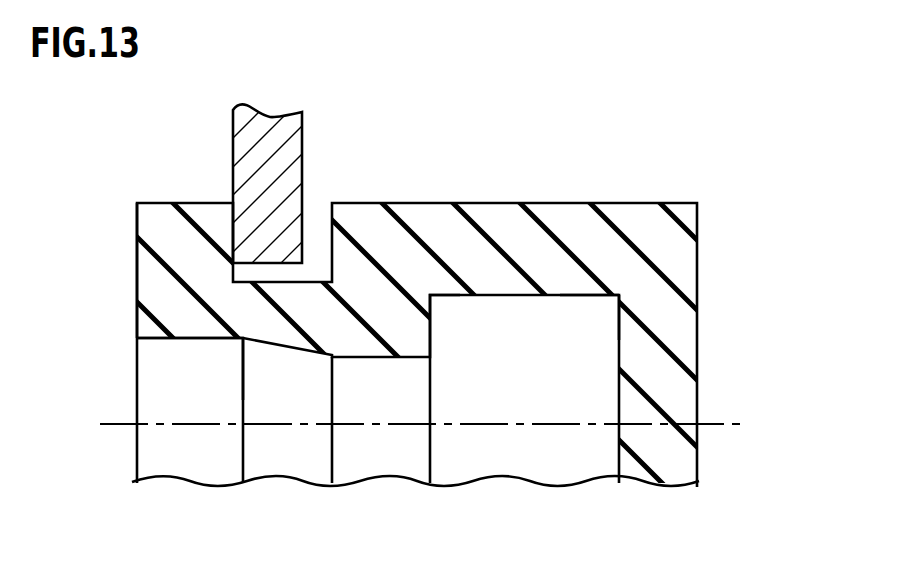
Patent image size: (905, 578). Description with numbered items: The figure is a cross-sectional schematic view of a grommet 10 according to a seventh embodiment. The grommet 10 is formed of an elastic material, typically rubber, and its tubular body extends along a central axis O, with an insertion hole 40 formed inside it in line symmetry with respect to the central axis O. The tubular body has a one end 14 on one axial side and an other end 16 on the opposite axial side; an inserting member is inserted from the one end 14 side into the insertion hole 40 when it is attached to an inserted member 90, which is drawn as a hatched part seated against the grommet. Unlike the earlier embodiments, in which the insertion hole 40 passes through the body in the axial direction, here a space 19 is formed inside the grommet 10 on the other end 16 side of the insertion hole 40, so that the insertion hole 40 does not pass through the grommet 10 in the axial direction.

The grommet 10 is at (403, 227).
The one end 14 is at (137, 285).
The other end 16 is at (433, 327).
The space 19 is at (587, 327).
The insertion hole 40 is at (157, 375).
The inserted member 90 is at (270, 154).
The central axis O is at (715, 421).